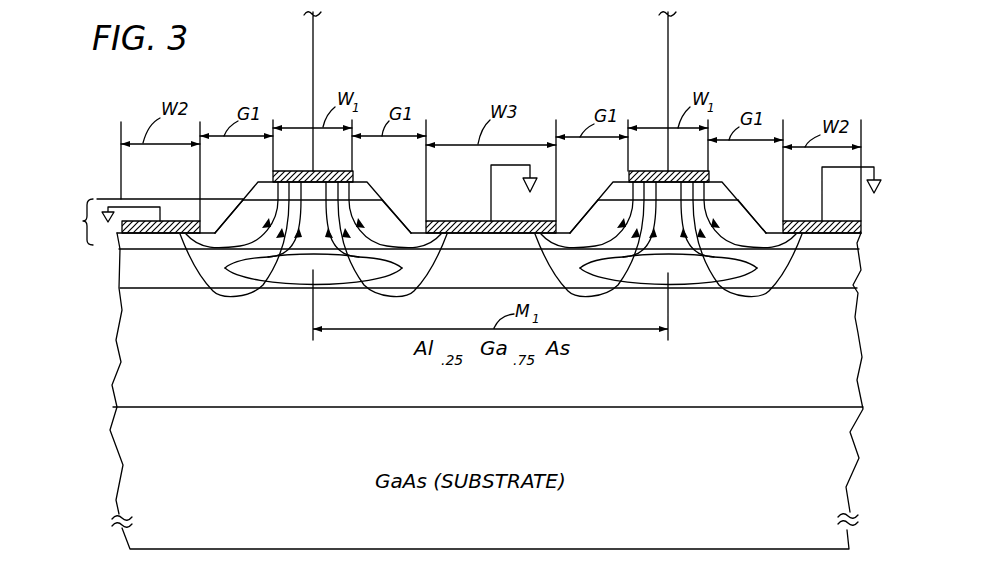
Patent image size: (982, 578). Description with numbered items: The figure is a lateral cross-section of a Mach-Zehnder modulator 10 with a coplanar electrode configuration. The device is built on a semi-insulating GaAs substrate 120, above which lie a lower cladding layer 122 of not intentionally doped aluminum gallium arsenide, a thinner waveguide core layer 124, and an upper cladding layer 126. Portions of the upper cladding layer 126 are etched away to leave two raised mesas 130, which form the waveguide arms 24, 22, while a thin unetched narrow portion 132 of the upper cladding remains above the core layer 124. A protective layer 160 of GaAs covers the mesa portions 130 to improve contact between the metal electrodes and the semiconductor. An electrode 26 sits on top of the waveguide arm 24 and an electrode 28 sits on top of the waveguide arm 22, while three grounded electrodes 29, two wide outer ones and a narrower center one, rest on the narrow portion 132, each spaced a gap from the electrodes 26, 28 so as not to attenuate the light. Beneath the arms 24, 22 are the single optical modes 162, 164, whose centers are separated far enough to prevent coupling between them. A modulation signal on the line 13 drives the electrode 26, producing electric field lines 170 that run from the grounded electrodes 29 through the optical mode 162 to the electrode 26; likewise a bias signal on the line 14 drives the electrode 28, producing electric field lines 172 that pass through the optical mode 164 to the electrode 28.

The Mach-Zehnder modulator 10 is at (89, 150).
The line 13 is at (313, 62).
The line 14 is at (668, 62).
The waveguide arm 22 is at (741, 201).
The waveguide arm 24 is at (383, 194).
The electrode 26 is at (280, 170).
The electrode 28 is at (630, 173).
The electrodes 29 is at (183, 227).
The substrate 120 is at (138, 463).
The lower cladding layer 122 is at (140, 342).
The waveguide core layer 124 is at (123, 287).
The upper cladding layer 126 is at (72, 222).
The mesa 130 is at (382, 200).
The narrow portion 132 is at (123, 245).
The layer of GaAs 160 is at (258, 195).
The optical mode 162 is at (285, 287).
The optical mode 164 is at (650, 290).
The electric field lines 170 is at (213, 293).
The electric field lines 172 is at (736, 295).